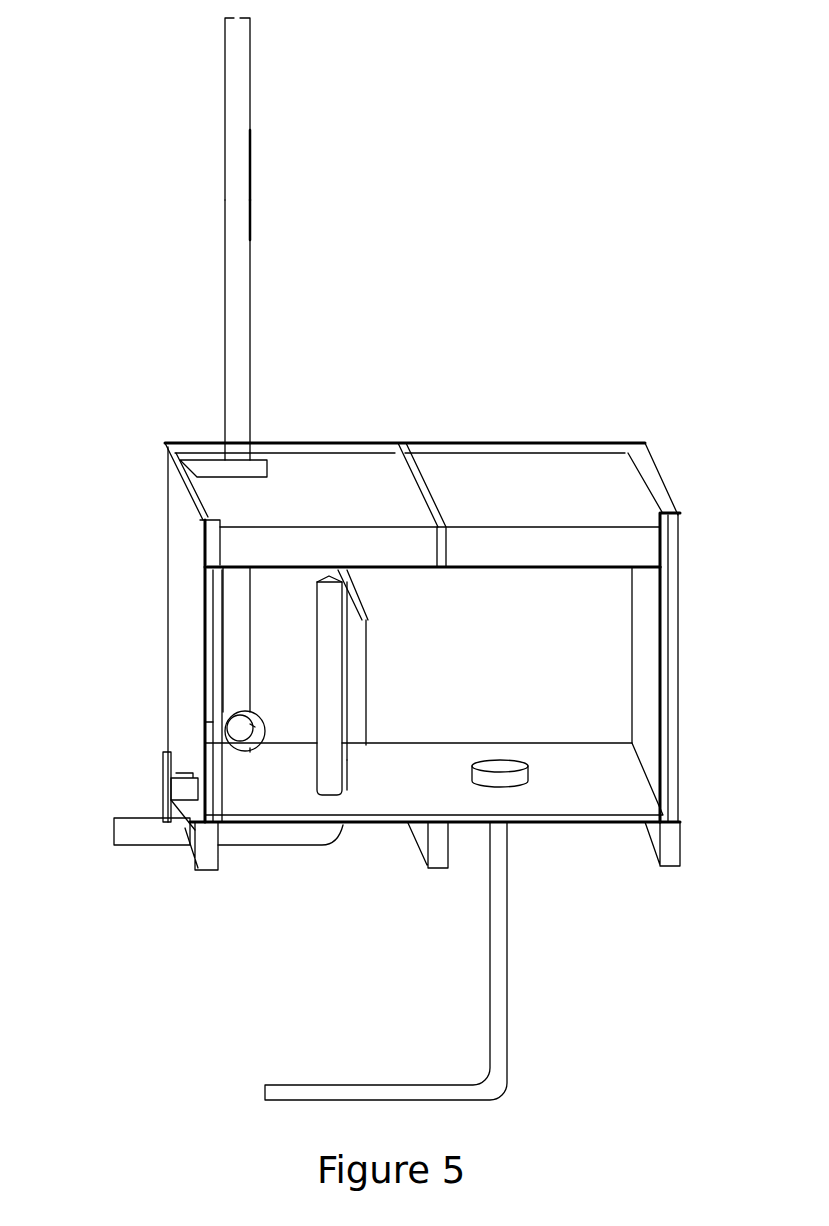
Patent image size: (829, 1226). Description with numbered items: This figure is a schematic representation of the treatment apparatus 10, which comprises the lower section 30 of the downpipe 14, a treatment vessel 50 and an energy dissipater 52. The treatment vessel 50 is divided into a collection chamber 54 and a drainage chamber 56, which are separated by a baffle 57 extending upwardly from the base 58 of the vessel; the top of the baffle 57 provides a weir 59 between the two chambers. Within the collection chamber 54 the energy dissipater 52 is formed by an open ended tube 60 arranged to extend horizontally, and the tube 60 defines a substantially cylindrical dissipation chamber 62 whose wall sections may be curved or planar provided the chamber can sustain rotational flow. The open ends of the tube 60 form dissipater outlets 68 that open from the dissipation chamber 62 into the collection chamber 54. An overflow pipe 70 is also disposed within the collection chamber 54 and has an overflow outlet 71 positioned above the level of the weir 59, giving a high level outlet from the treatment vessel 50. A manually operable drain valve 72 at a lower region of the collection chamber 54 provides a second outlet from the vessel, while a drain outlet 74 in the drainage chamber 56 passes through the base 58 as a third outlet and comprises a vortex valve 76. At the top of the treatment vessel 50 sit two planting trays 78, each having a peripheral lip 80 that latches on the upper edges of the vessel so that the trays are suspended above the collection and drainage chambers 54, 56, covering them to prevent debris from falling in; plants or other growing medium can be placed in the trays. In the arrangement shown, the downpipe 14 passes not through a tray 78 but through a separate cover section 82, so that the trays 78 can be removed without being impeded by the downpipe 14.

The treatment apparatus 10 is at (508, 360).
The downpipe 14 is at (232, 148).
The lower section 30 is at (235, 300).
The treatment vessel 50 is at (190, 607).
The energy dissipater 52 is at (213, 720).
The collection chamber 54 is at (310, 667).
The drainage chamber 56 is at (543, 667).
The baffle 57 is at (353, 773).
The base 58 is at (578, 803).
The weir 59 is at (360, 603).
The open ended tube 60 is at (250, 748).
The dissipation chamber 62 is at (250, 724).
The dissipater outlets 68 is at (227, 715).
The overflow pipe 70 is at (333, 683).
The overflow outlet 71 is at (333, 578).
The drain valve 72 is at (165, 790).
The drain outlet 74 is at (470, 777).
The vortex valve 76 is at (503, 777).
The planting trays 78 is at (313, 465).
The peripheral lip 80 is at (200, 492).
The cover section 82 is at (186, 447).